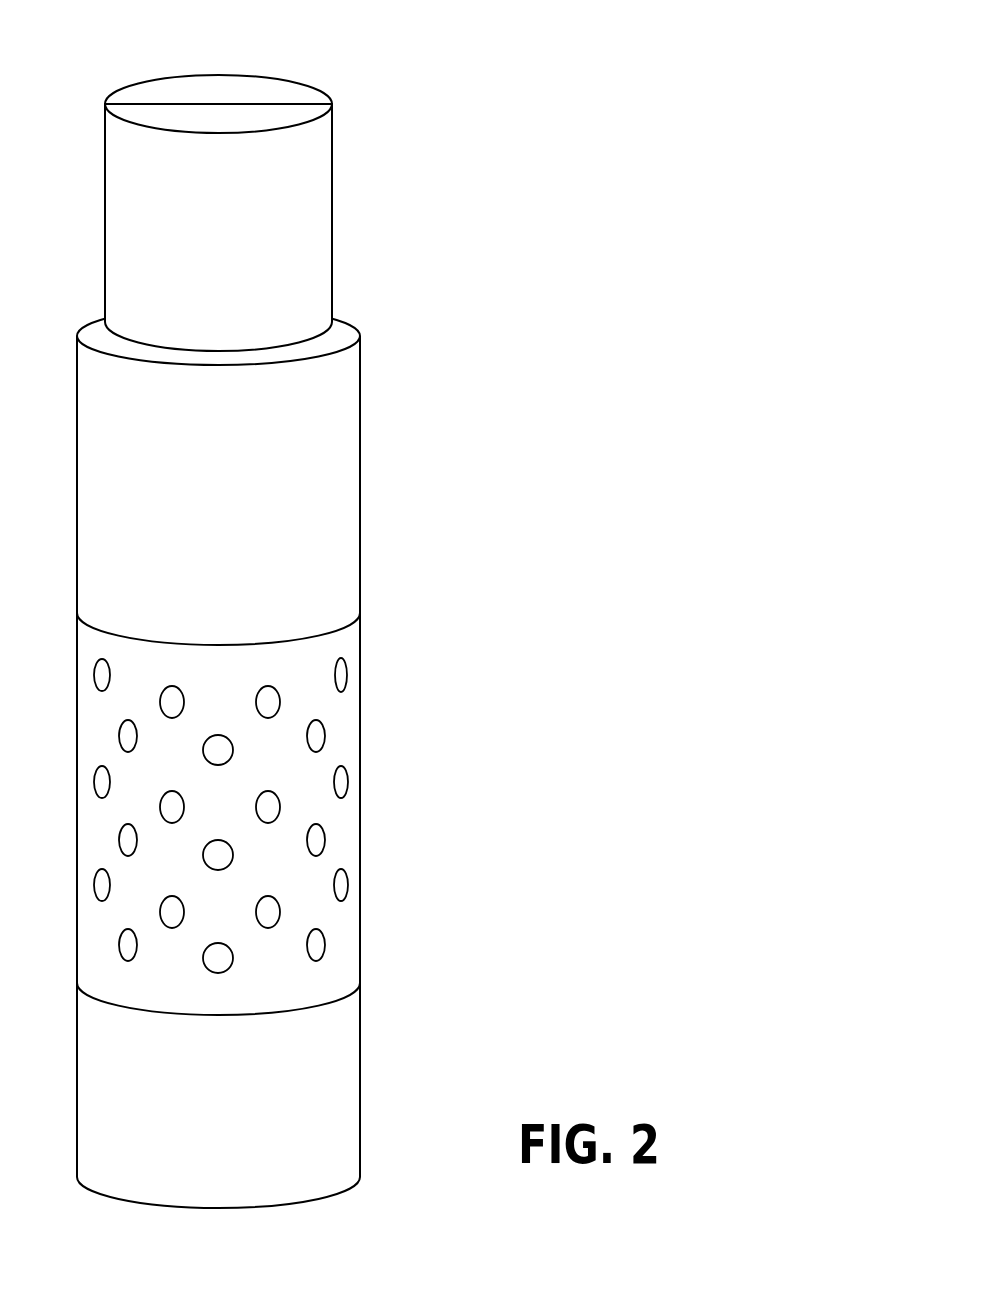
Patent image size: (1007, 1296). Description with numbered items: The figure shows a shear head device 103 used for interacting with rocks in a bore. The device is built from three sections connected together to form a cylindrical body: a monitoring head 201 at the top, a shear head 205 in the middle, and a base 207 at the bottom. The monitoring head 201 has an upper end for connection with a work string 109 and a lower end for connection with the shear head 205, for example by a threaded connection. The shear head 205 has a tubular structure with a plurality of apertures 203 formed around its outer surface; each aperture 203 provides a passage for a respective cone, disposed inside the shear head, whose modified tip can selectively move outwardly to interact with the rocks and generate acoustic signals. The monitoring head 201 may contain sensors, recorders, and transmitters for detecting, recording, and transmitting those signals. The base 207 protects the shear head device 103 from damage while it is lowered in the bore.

The shear head device 103 is at (372, 609).
The work string 109 is at (332, 212).
The monitoring head 201 is at (360, 467).
The apertures 203 is at (341, 675).
The shear head 205 is at (300, 812).
The base 207 is at (360, 1052).